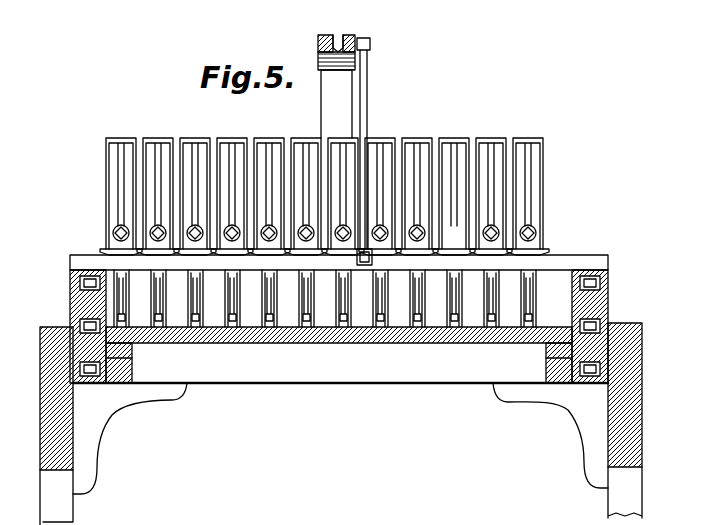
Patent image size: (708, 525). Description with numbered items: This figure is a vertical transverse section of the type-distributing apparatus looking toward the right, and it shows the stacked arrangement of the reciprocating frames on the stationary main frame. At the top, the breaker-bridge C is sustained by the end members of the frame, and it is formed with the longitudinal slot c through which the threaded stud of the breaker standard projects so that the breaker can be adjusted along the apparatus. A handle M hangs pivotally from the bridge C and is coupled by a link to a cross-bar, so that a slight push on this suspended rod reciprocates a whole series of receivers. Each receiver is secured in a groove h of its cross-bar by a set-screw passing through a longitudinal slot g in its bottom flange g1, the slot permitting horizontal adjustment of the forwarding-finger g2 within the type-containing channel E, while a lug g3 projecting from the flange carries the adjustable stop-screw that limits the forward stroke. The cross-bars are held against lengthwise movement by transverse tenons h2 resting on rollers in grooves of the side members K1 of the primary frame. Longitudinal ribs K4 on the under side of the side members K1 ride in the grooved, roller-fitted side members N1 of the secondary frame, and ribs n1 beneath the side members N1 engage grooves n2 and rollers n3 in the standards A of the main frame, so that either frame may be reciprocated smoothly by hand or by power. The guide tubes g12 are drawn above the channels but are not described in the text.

The guide tubes g12 is at (104, 190).
The lug g3 is at (126, 228).
The bottom flange g1 is at (346, 226).
The forwarding-finger g2 is at (160, 300).
The longitudinal slot g is at (227, 294).
The type-containing channel E is at (260, 292).
The breaker-bridge C is at (322, 35).
The longitudinal slot c is at (340, 33).
The handle M is at (368, 100).
The groove h is at (158, 264).
The transverse tenon h2 is at (82, 283).
The side member K1 is at (70, 300).
The longitudinal rib or tenon K4 is at (82, 322).
The side member N1 is at (72, 325).
The rib or tenon n1 is at (132, 360).
The groove n2 is at (116, 384).
The roller n3 is at (88, 384).
The standard A is at (130, 425).